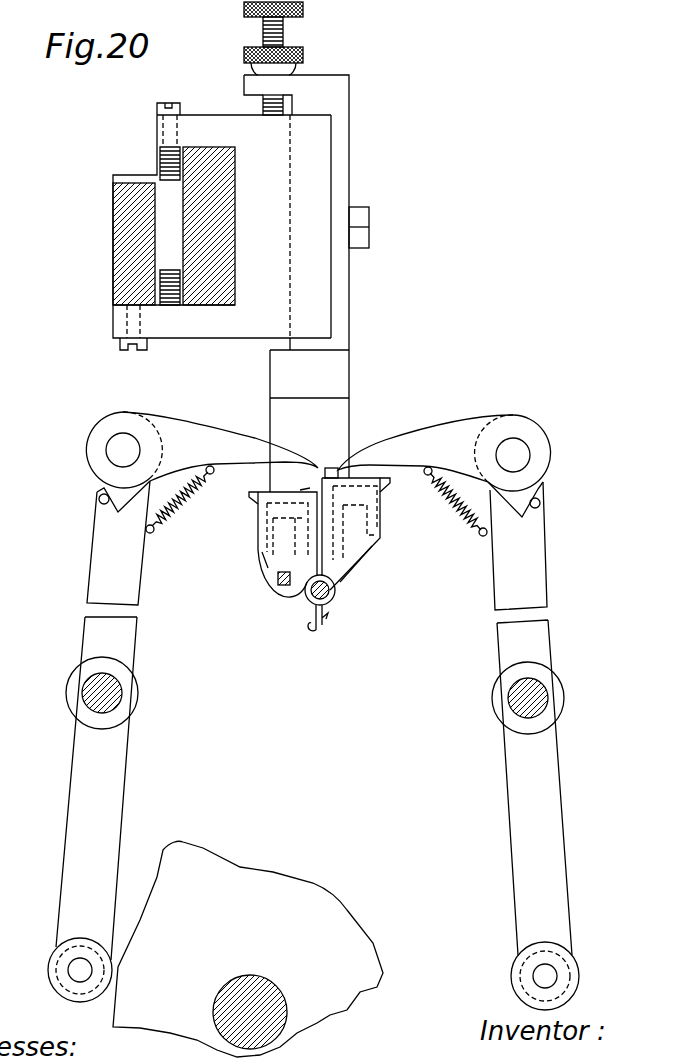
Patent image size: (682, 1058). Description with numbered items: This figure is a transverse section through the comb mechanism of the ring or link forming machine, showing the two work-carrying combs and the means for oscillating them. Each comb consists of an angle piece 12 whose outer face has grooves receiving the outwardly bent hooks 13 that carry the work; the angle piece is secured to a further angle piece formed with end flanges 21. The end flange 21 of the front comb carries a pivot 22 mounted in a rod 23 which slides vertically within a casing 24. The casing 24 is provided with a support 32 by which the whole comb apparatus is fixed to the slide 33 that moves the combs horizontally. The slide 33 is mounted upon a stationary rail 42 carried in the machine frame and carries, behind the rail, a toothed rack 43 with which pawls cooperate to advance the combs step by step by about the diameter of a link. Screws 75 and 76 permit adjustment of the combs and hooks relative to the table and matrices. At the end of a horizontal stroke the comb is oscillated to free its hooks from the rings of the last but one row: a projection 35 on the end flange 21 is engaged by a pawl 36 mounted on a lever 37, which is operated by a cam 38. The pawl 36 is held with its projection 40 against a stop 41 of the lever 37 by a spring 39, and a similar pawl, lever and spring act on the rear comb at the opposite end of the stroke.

The screw 75 is at (244, 12).
The stationary rail 42 is at (212, 150).
The toothed rack 43 is at (122, 223).
The slide 33 is at (222, 226).
The screw 76 is at (362, 217).
The support 32 is at (340, 301).
The casing 24 is at (340, 380).
The pawl 36 is at (210, 430).
The projection 35 is at (335, 472).
The stop 41 is at (100, 495).
The projection 40 is at (118, 512).
The spring 39 is at (187, 500).
The lever 37 is at (97, 580).
The angle piece 12 is at (389, 490).
The end flange 21 is at (350, 558).
The rod 23 is at (280, 585).
The pivot 22 is at (325, 594).
The hook 13 is at (326, 620).
The cam 38 is at (248, 949).